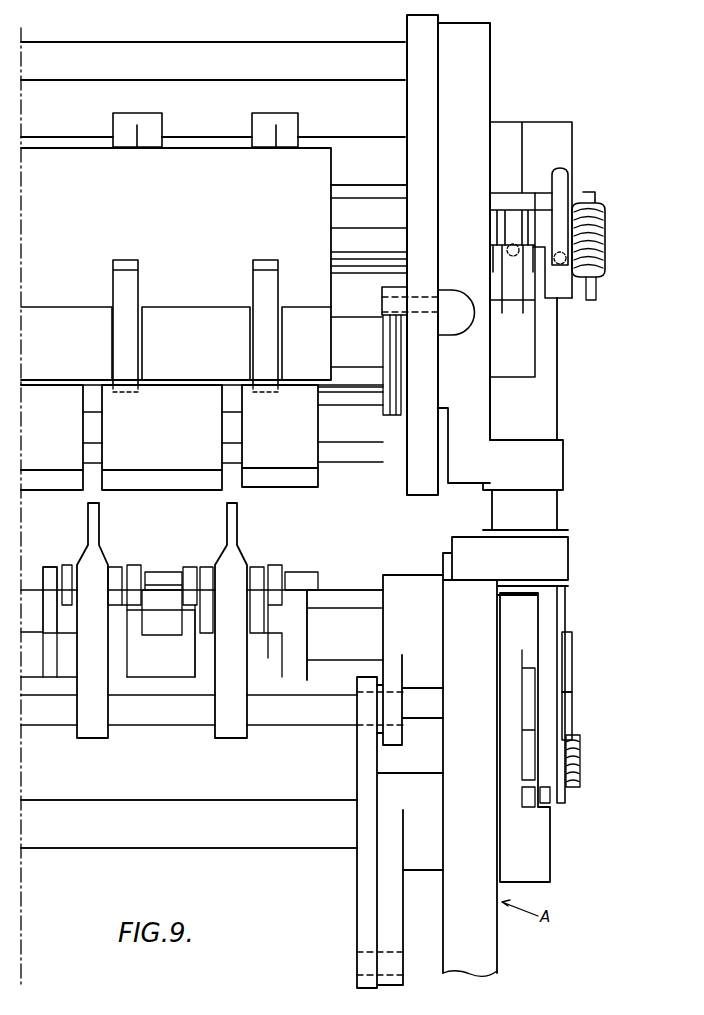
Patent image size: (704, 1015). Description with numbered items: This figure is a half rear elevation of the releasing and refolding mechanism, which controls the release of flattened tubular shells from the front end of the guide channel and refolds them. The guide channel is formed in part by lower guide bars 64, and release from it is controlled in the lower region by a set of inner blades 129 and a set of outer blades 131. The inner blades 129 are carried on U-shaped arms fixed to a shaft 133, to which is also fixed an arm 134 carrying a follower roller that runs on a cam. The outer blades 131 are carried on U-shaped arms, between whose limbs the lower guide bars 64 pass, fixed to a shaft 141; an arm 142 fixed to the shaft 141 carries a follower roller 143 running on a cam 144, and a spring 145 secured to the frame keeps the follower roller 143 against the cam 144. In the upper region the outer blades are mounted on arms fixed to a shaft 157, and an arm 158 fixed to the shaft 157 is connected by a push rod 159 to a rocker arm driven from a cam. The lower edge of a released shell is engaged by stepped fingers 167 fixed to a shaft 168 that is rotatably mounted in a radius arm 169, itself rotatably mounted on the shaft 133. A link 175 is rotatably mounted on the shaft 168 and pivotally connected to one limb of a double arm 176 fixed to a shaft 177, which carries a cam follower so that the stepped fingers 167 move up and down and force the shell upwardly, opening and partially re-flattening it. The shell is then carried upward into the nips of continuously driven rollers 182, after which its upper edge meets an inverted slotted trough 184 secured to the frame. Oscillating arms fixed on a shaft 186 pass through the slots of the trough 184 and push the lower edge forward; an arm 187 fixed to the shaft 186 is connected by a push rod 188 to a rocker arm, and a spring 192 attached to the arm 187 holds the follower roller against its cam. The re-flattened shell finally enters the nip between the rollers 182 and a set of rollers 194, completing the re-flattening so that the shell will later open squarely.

The arm 187 is at (118, 122).
The shaft 186 is at (349, 140).
The push rod 159 is at (505, 250).
The spring 192 is at (598, 230).
The shaft 157 is at (353, 328).
The push rod 188 is at (560, 265).
The arm 158 is at (515, 325).
The inverted slotted trough 184 is at (120, 340).
The set of rollers 194 is at (190, 395).
The set of continuously driven rollers 182 is at (58, 480).
The stepped fingers 167 is at (88, 514).
The lower set of outer blades 131 is at (67, 570).
The lower set of inner blades 129 is at (188, 565).
The lower guide bars 64 is at (165, 585).
The shaft 141 is at (373, 590).
The shaft 133 is at (338, 612).
The radius arm 169 is at (393, 674).
The shaft 168 is at (62, 728).
The link 175 is at (365, 748).
The shaft 177 is at (200, 805).
The double arm 176 is at (387, 900).
The arm 134 is at (497, 795).
The cam 144 is at (568, 660).
The follower roller 143 is at (568, 720).
The spring 145 is at (585, 772).
The arm 142 is at (555, 798).